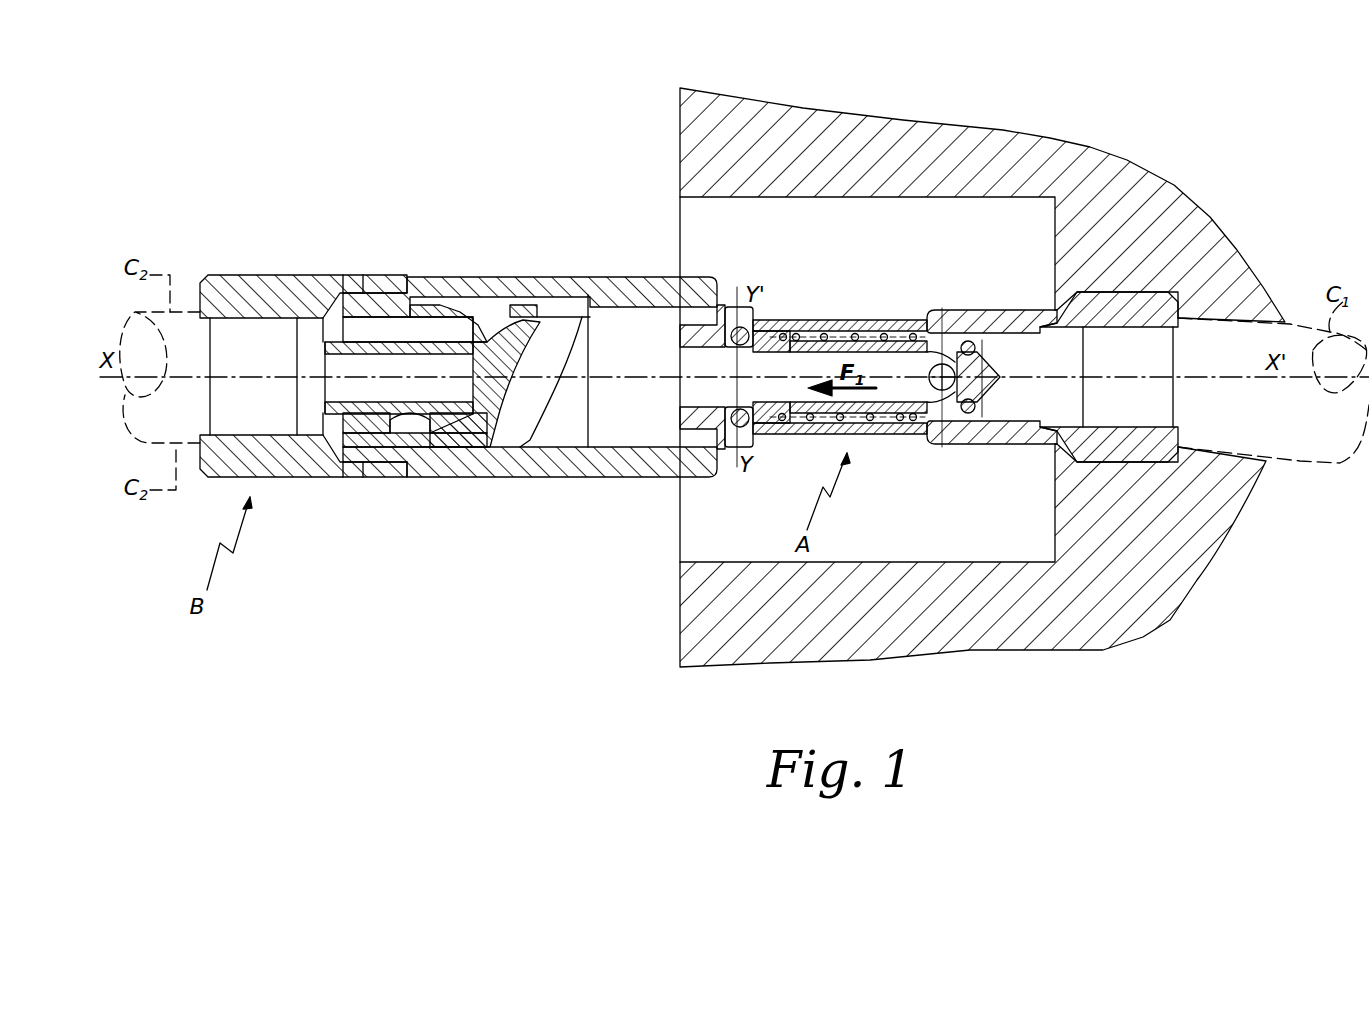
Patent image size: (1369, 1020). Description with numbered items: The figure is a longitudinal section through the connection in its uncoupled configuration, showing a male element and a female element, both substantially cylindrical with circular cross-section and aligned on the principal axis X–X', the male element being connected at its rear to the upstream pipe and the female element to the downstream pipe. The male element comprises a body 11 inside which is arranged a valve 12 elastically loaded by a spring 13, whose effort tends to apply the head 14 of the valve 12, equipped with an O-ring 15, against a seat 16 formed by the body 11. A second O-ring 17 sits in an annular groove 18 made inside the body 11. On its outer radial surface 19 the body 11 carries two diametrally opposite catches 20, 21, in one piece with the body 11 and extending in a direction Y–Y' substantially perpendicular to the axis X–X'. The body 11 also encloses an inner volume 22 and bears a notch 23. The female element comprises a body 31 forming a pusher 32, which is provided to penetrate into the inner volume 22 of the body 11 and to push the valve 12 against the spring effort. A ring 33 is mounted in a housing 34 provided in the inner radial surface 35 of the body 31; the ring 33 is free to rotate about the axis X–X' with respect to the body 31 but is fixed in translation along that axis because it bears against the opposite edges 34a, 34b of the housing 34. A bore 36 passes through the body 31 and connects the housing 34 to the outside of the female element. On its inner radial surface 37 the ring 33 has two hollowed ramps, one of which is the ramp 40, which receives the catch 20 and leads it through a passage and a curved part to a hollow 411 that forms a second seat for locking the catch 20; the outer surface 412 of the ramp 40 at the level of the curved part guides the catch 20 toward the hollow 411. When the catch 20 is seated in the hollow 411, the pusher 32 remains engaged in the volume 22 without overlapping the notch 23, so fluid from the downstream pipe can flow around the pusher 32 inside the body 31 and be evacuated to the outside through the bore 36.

The body 11 is at (1003, 323).
The valve 12 is at (905, 410).
The spring 13 is at (840, 322).
The head 14 is at (975, 441).
The O-ring 15 is at (982, 312).
The seat 16 is at (955, 410).
The second O-ring 17 is at (762, 331).
The annular groove 18 is at (758, 425).
The outer radial surface 19 is at (863, 332).
The catch 20 is at (730, 305).
The catch 21 is at (735, 447).
The inner volume 22 is at (697, 398).
The notch 23 is at (731, 330).
The body 31 is at (410, 285).
The pusher 32 is at (365, 415).
The ring 33 is at (495, 440).
The housing 34 is at (515, 300).
The edge of the housing 34a is at (585, 452).
The edge of the housing 34b is at (343, 282).
The inner radial surface 35 is at (637, 312).
The bore 36 is at (358, 292).
The inner radial surface 37 is at (520, 443).
The ramp 40 is at (418, 430).
The hollow 411 is at (503, 345).
The outer surface of the ramp 412 is at (517, 333).